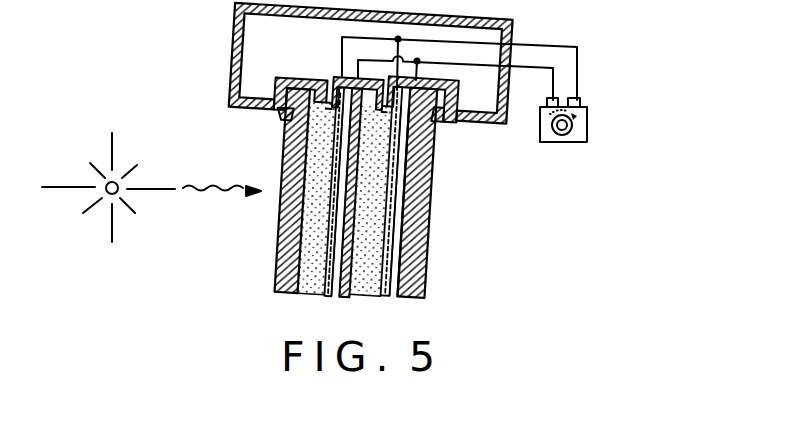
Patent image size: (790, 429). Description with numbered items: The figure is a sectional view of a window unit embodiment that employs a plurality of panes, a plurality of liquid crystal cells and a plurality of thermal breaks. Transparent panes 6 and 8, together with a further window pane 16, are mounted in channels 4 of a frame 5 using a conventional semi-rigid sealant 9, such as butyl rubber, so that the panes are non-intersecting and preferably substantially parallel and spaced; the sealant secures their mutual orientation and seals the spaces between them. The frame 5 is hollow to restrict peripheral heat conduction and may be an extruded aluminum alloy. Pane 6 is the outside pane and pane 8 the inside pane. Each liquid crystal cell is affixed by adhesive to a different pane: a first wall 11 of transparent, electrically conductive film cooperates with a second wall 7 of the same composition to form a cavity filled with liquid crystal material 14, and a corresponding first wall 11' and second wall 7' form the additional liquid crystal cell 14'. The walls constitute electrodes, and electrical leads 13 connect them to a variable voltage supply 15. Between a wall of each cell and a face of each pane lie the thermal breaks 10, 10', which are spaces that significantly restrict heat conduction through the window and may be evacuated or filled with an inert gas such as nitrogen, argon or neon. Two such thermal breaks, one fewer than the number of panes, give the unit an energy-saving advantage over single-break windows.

The channels 4 is at (297, 78).
The frame 5 is at (234, 30).
The transparent pane 6 is at (282, 260).
The second wall 7 is at (420, 191).
The second wall 7' is at (299, 191).
The transparent pane 8 is at (432, 270).
The semi-rigid sealant 9 is at (283, 116).
The space 10 is at (361, 221).
The thermal break 10' is at (302, 214).
The first wall 11 is at (436, 202).
The first wall 11' is at (304, 192).
The electrical leads 13 is at (533, 66).
The liquid crystal material 14 is at (435, 201).
The liquid crystal cell 14' is at (296, 202).
The variable voltage supply 15 is at (586, 128).
The window pane 16 is at (349, 252).